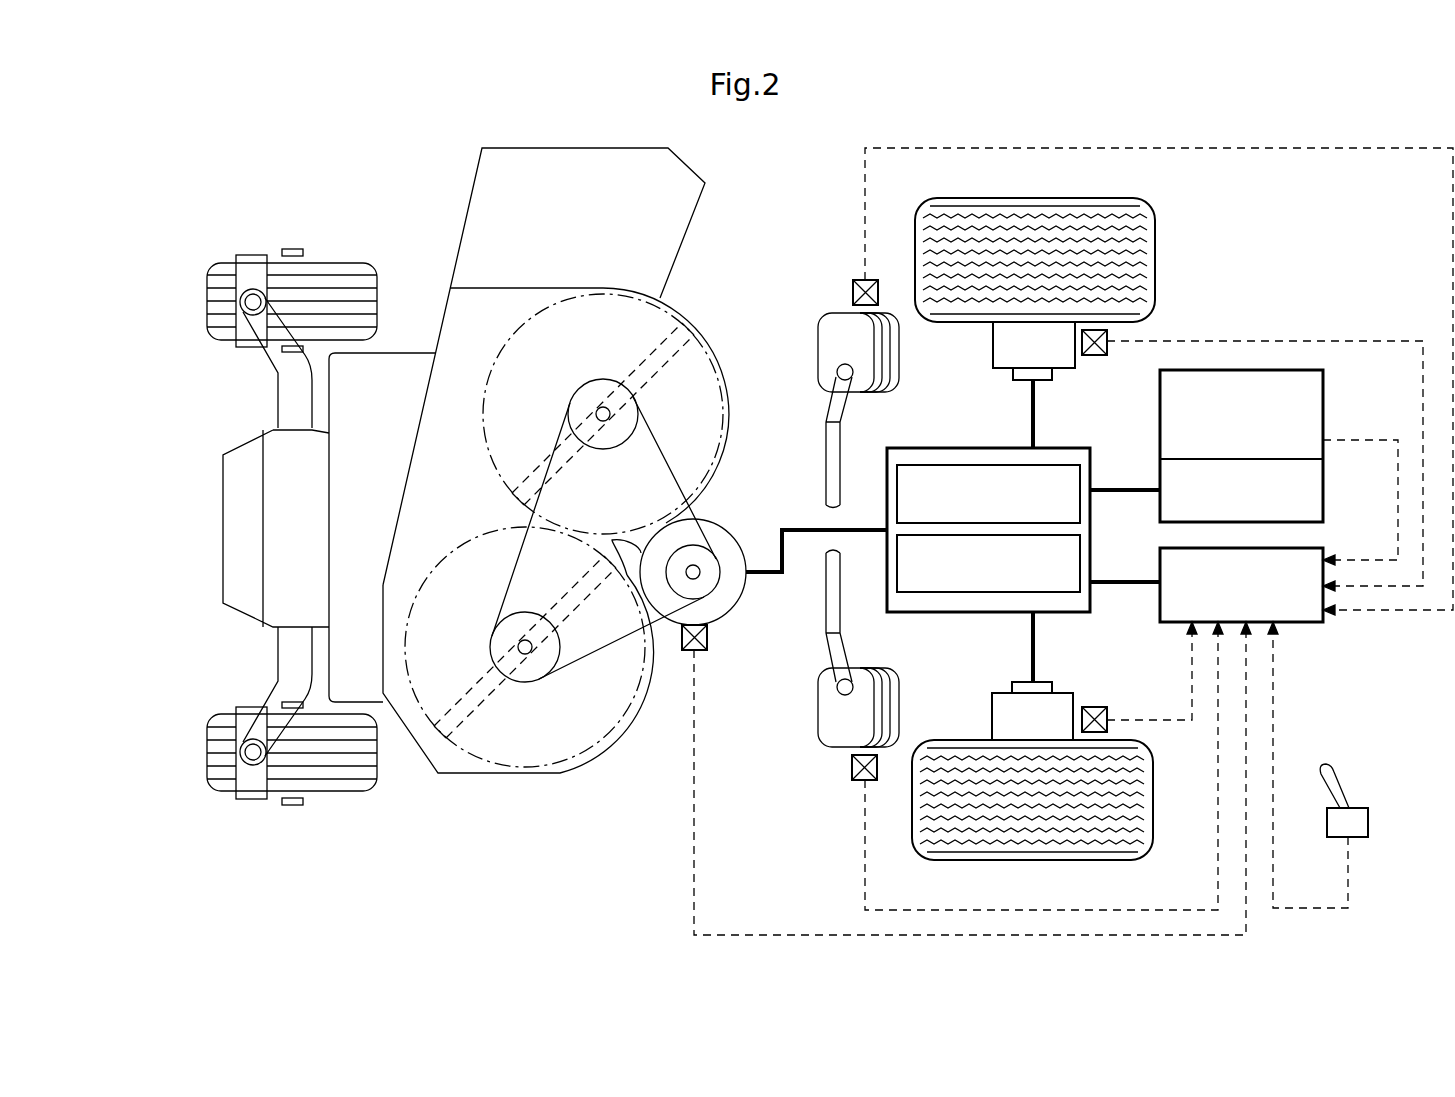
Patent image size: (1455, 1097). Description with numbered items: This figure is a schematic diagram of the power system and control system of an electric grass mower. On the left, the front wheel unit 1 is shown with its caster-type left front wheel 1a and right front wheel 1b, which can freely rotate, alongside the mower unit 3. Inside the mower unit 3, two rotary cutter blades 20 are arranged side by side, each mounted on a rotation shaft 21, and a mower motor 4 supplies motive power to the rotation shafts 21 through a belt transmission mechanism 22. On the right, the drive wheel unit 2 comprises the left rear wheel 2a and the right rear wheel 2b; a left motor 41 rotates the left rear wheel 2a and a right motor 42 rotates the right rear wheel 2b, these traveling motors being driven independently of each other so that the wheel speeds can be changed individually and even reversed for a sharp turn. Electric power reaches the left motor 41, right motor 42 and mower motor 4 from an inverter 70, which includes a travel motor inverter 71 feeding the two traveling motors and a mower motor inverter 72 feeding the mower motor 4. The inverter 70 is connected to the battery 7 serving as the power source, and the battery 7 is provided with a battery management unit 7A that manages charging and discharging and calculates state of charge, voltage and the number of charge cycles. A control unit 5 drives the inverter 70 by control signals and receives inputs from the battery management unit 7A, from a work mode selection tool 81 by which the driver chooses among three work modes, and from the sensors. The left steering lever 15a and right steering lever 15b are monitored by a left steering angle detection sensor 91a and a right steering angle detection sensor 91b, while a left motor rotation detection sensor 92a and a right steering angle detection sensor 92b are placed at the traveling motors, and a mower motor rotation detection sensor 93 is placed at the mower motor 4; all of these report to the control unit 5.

The front wheel unit 1 is at (230, 527).
The left front wheel 1a is at (207, 757).
The right front wheel 1b is at (207, 300).
The drive wheel unit 2 is at (1033, 534).
The left rear wheel 2a is at (1017, 862).
The right rear wheel 2b is at (1020, 198).
The mower unit 3 is at (422, 752).
The mower motor 4 is at (733, 620).
The control unit 5 is at (1305, 622).
The battery 7 is at (1279, 467).
The battery management unit 7A is at (1325, 398).
The left steering lever 15a is at (842, 606).
The right steering lever 15b is at (841, 452).
The cutter blade 20 is at (540, 450).
The rotation shaft 21 is at (600, 395).
The belt transmission mechanism 22 is at (505, 517).
The left motor 41 is at (992, 718).
The right motor 42 is at (993, 345).
The inverter 70 is at (1023, 532).
The travel motor inverter 71 is at (1052, 465).
The mower motor inverter 72 is at (957, 597).
The work mode selection tool 81 is at (1352, 786).
The left steering angle detection sensor 91a is at (852, 772).
The right steering angle detection sensor 91b is at (852, 292).
The left motor rotation detection sensor 92a is at (1095, 705).
The right steering angle detection sensor 92b is at (1095, 356).
The mower motor rotation detection sensor 93 is at (688, 652).